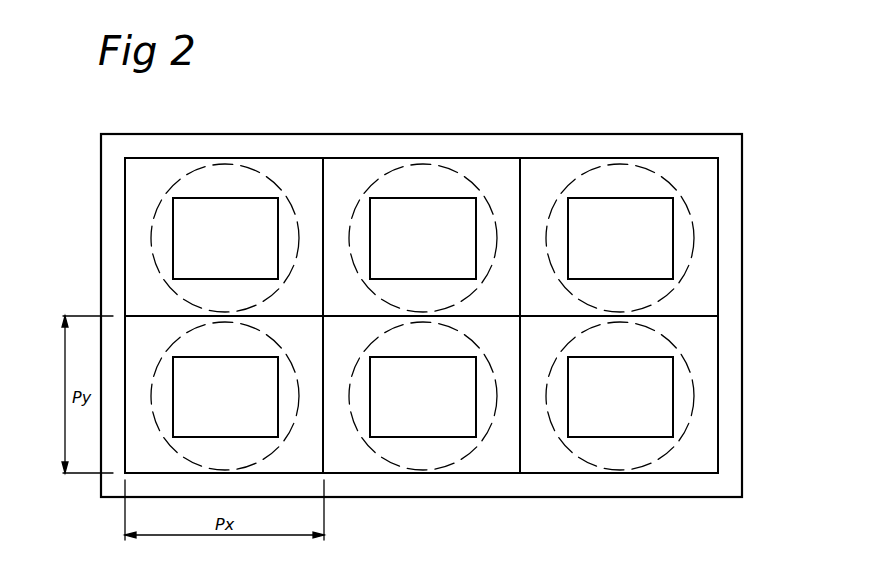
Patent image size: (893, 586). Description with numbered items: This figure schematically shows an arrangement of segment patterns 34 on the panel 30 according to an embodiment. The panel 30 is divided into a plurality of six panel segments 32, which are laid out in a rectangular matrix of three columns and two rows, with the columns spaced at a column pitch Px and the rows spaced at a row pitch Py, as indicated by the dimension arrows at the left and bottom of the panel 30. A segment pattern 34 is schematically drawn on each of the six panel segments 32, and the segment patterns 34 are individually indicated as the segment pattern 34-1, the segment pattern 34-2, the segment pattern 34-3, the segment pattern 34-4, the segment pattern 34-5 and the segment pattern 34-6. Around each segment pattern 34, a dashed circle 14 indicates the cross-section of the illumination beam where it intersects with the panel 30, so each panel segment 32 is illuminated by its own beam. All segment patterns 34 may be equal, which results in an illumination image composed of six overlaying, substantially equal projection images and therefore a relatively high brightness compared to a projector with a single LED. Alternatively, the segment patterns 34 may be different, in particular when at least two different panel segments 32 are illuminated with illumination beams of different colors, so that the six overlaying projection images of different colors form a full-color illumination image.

The panel 30 is at (716, 126).
The panel segments 32 is at (342, 172).
The circles 14 is at (235, 183).
The segment patterns 34 is at (479, 265).
The segment pattern 34-1 is at (225, 238).
The segment pattern 34-2 is at (423, 238).
The segment pattern 34-3 is at (620, 238).
The segment pattern 34-4 is at (225, 397).
The segment pattern 34-5 is at (423, 397).
The segment pattern 34-6 is at (620, 397).